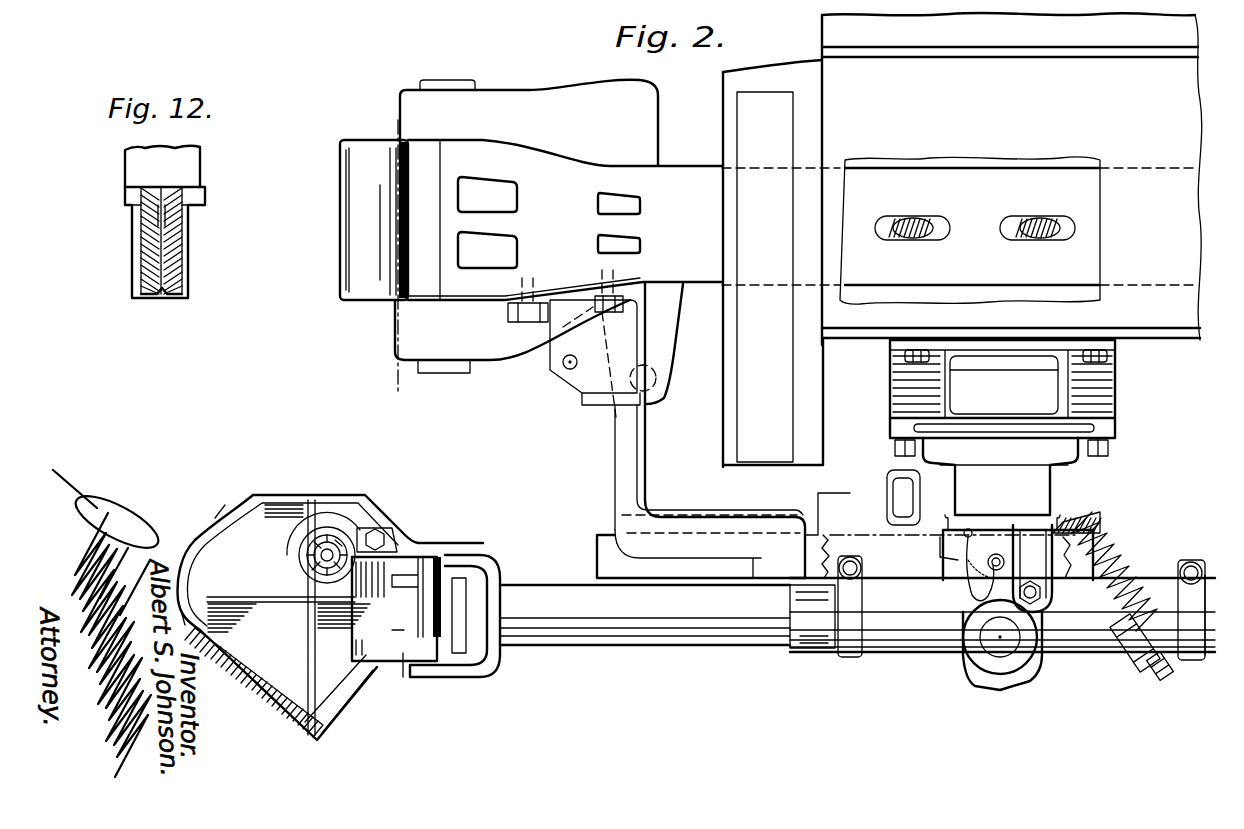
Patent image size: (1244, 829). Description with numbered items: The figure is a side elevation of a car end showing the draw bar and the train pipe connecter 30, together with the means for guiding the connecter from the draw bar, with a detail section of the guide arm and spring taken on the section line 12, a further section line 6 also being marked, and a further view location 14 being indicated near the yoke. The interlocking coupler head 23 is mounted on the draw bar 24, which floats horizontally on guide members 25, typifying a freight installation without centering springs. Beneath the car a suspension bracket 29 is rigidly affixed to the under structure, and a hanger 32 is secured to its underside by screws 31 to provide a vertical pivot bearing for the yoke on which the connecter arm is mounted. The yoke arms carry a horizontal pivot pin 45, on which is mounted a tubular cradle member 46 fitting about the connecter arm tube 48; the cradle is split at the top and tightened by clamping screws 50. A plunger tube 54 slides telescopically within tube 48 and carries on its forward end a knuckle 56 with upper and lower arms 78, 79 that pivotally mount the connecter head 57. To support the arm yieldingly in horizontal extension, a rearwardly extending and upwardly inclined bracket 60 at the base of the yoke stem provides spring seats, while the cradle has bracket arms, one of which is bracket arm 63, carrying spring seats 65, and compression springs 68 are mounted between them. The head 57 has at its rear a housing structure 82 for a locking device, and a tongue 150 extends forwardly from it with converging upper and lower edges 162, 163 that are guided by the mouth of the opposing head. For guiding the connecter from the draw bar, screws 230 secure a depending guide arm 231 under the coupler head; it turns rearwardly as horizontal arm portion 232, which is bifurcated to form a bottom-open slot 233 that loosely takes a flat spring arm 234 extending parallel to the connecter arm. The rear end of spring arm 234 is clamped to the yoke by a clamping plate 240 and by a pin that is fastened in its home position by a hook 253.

In FIG. 12, the rearward horizontal arm portion 232 is at (190, 216).
In FIG. 2, the rearward horizontal arm portion 232 is at (706, 511).
In FIG. 12, the longitudinally extending slot 233 is at (152, 213).
In FIG. 12, the spring arm 234 is at (166, 298).
In FIG. 2, the spring arm 234 is at (606, 540).
In FIG. 2, the interlocking head 23 is at (526, 226).
In FIG. 2, the draw bar 24 is at (581, 263).
In FIG. 2, the guide member 25 is at (1038, 216).
In FIG. 2, the screws 230 is at (597, 306).
In FIG. 2, the depending guide arm 231 is at (642, 434).
In FIG. 2, the section line 12— 12 is at (757, 503).
In FIG. 2, the section line 6— 6 is at (850, 546).
In FIG. 2, the suspension bracket 29 is at (1110, 378).
In FIG. 2, the screws 31 is at (893, 449).
In FIG. 2, the hanger 32 is at (961, 509).
In FIG. 2, the bracket 60 is at (1100, 519).
In FIG. 2, the compression springs 68 is at (1116, 600).
In FIG. 2, the spring seats 65 is at (1115, 640).
In FIG. 2, the bracket arm 63 is at (1152, 662).
In FIG. 2, the clamping plate 240 is at (1032, 568).
In FIG. 2, the pin 14 is at (1019, 619).
In FIG. 2, the hook 253 is at (986, 560).
In FIG. 2, the cradle member 46 is at (915, 640).
In FIG. 2, the connecter arm tube 48 is at (803, 650).
In FIG. 2, the clamping screws 50 is at (856, 565).
In FIG. 2, the horizontal pivot pin 45 is at (995, 644).
In FIG. 2, the plunger tube 54 is at (645, 615).
In FIG. 2, the train pipe connecter 30 is at (542, 583).
In FIG. 2, the connecter head 57 is at (367, 497).
In FIG. 2, the upper edge 162 is at (234, 516).
In FIG. 2, the lower edge 163 is at (272, 700).
In FIG. 2, the tongue 150 is at (282, 626).
In FIG. 2, the housing structure 82 is at (406, 622).
In FIG. 2, the knuckle 56 is at (490, 566).
In FIG. 2, the upper arm 78 is at (456, 573).
In FIG. 2, the lower arm 79 is at (452, 678).